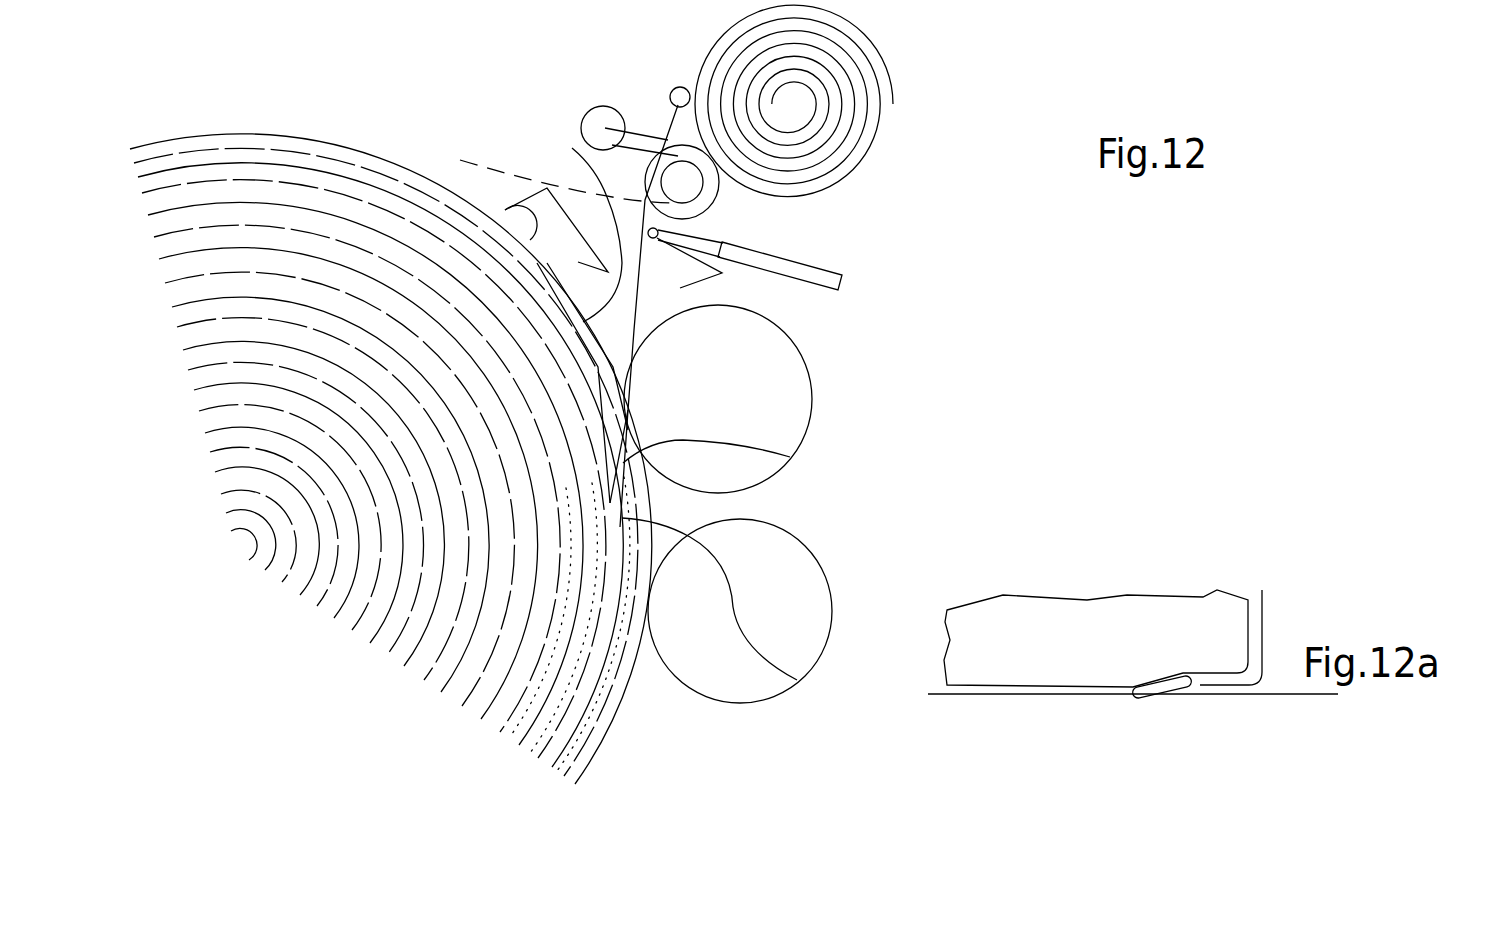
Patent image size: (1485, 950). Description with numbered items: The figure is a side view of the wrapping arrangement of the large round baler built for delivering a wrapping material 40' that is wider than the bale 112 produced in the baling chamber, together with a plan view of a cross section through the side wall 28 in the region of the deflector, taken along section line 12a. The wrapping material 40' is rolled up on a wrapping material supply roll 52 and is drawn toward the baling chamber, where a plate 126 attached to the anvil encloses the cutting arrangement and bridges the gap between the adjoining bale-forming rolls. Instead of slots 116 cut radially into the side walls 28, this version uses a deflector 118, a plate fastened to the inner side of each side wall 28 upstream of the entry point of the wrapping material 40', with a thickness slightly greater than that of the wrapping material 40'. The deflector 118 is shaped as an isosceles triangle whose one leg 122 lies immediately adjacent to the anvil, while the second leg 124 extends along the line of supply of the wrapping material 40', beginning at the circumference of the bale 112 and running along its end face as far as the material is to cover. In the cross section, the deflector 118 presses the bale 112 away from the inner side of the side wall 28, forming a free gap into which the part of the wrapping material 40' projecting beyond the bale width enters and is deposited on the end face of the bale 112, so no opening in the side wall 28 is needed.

In FIG. 12, the wrapping material supply roll 52 is at (810, 122).
In FIG. 12, the leg 122 is at (578, 221).
In FIG. 12, the plate 126 is at (530, 192).
In FIG. 12, the second leg 124 is at (625, 413).
In FIG. 12, the slots 116 is at (790, 457).
In FIG. 12, the wrapping material 40' is at (750, 623).
In FIG. 12, the deflector 118 is at (582, 399).
In FIG. 12A, the deflector 118 is at (1160, 697).
In FIG. 12A, the bale 112 is at (1202, 597).
In FIG. 12A, the side walls 28 is at (1273, 698).
In FIG. 12, the section line 12a is at (635, 375).